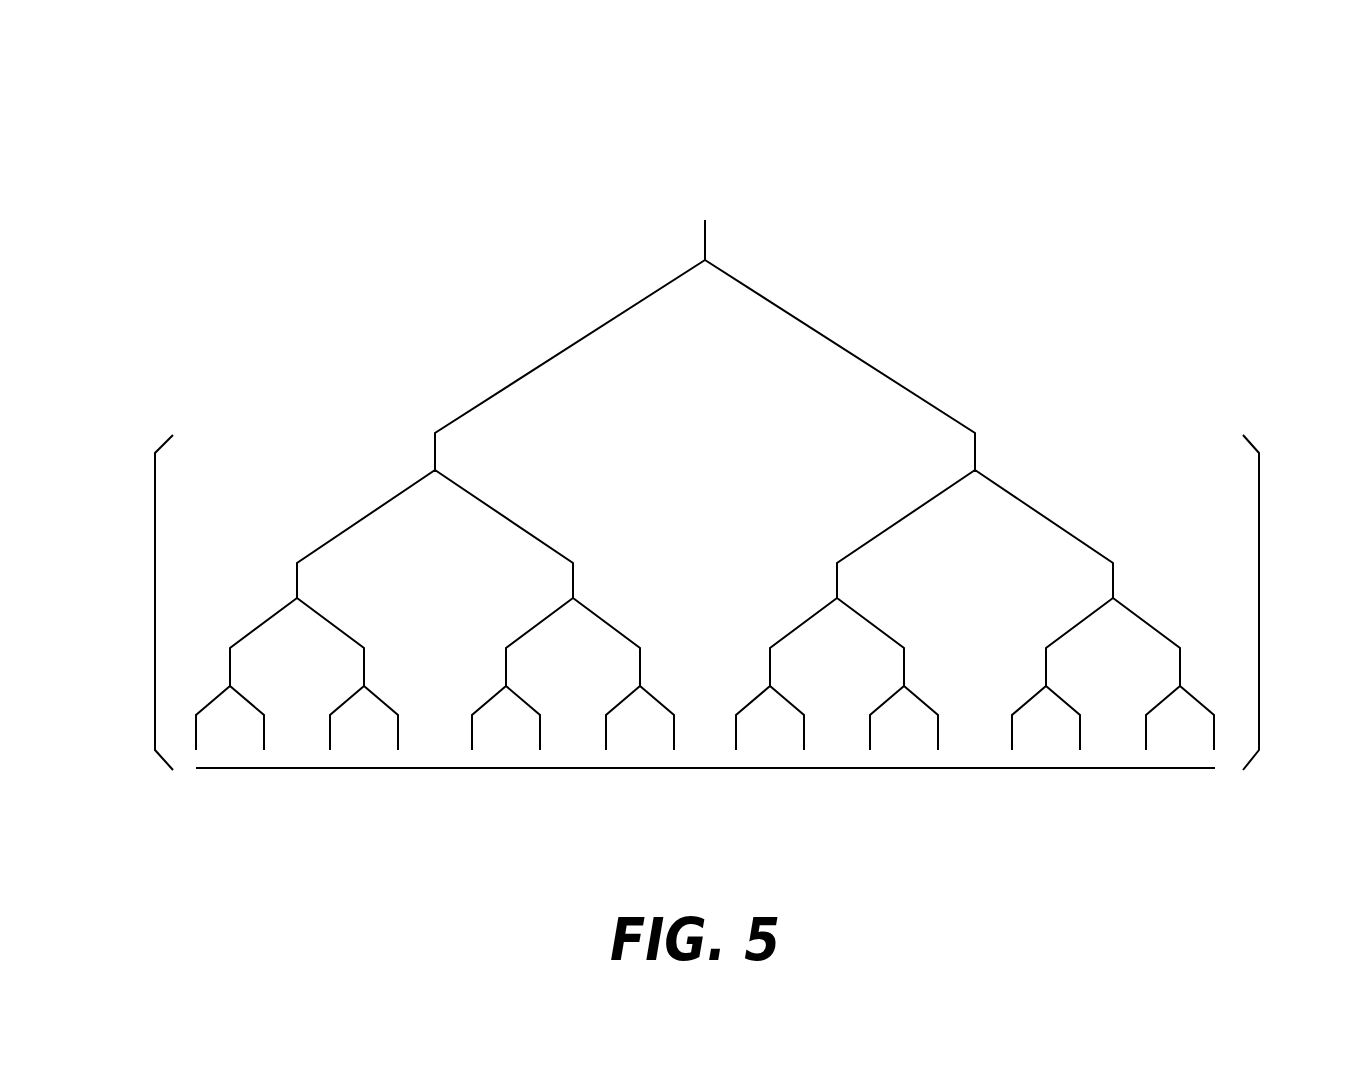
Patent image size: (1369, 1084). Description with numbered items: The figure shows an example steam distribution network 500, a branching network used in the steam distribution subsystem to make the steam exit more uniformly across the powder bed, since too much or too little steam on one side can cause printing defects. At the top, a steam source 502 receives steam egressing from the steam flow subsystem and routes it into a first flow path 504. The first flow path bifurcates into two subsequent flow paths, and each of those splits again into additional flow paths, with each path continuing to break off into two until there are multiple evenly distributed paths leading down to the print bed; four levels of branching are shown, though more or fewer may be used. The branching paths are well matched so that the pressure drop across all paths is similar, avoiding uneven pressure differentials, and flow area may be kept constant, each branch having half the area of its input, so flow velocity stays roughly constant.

The steam distribution network 500 is at (700, 68).
The steam source 502 is at (782, 201).
The first flow path 504 is at (706, 238).